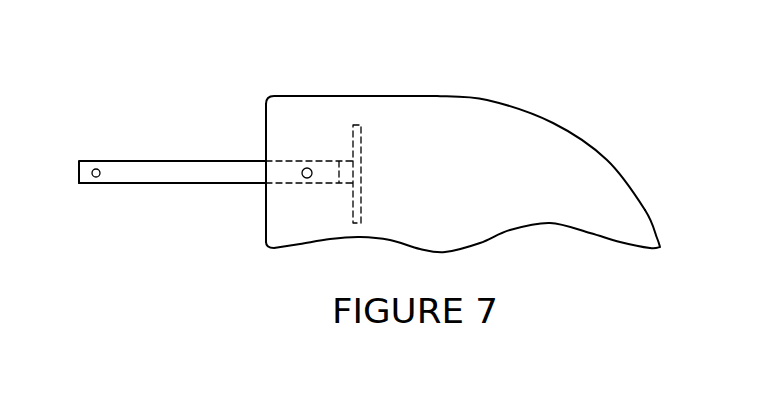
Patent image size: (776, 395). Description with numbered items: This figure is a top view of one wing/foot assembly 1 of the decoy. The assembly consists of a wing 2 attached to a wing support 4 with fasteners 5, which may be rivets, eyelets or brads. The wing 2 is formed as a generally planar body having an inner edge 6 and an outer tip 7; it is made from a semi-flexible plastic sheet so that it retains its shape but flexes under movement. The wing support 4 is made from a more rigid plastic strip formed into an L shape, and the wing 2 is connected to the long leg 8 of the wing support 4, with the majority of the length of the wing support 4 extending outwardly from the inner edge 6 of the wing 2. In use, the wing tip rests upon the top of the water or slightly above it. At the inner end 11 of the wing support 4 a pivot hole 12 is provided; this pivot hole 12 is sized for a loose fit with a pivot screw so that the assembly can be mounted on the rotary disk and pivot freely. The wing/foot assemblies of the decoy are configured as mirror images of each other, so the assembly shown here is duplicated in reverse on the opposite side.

The wing/foot assembly 1 is at (257, 195).
The wing 2 is at (410, 93).
The wing support 4 is at (150, 161).
The fasteners 5 is at (311, 169).
The inner edge 6 is at (267, 129).
The outer tip 7 is at (663, 246).
The long leg 8 is at (217, 175).
The inner end 11 is at (80, 183).
The pivot hole 12 is at (97, 168).